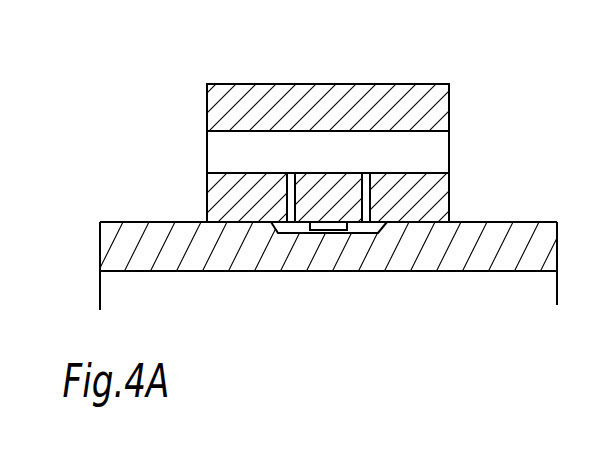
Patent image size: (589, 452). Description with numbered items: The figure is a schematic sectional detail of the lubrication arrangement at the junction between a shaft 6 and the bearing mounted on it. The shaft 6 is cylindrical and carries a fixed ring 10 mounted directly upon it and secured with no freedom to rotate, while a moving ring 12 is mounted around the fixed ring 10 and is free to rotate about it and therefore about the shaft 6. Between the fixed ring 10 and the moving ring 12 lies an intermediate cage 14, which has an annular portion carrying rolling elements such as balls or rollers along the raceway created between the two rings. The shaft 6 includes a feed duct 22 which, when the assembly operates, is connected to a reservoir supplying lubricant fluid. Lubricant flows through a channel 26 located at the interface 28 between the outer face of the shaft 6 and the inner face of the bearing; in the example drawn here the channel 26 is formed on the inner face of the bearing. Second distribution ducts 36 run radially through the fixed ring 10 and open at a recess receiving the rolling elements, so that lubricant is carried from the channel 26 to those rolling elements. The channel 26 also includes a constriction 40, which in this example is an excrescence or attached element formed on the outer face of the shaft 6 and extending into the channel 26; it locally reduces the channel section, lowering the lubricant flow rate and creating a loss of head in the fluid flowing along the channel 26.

The shaft 6 is at (132, 242).
The fixed ring 10 is at (228, 206).
The moving ring 12 is at (415, 95).
The intermediate cage 14 is at (430, 157).
The feed duct 22 is at (150, 289).
The channel 26 is at (344, 238).
The interface 28 is at (460, 215).
The second distribution ducts 36 is at (366, 170).
The constriction 40 is at (306, 229).